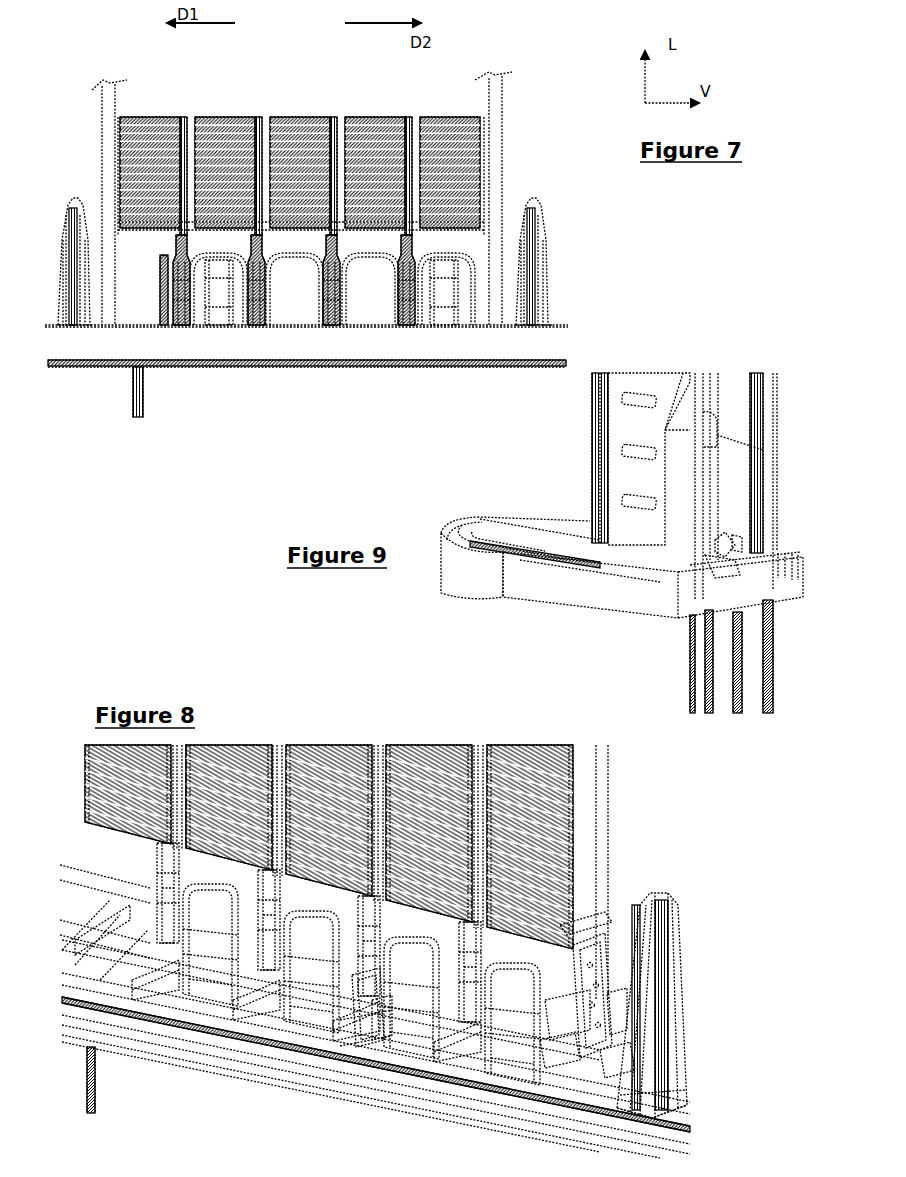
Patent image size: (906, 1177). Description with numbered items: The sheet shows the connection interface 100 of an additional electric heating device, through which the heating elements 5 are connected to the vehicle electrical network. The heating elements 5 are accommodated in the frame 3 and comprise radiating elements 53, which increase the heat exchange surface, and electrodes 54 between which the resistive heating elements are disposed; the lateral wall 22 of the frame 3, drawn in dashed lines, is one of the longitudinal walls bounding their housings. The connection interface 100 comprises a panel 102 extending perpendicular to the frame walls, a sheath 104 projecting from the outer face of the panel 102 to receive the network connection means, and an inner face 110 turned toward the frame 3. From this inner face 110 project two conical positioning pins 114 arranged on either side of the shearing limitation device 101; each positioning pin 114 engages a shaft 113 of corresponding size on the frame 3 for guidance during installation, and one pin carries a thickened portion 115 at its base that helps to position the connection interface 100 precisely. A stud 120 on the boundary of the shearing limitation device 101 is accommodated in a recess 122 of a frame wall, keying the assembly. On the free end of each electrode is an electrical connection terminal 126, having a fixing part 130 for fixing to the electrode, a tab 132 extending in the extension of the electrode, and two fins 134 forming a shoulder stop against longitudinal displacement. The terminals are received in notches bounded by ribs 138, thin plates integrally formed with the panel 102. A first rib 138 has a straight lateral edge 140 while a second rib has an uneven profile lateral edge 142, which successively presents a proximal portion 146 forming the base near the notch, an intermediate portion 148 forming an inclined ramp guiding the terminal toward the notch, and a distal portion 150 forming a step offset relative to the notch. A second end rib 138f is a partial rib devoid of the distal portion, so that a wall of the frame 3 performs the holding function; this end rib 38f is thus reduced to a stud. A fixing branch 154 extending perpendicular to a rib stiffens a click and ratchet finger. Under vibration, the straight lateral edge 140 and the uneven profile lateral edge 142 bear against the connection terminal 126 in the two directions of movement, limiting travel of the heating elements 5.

In FIG. 9, the frame 3 is at (657, 479).
In FIG. 7, the heating elements 5 is at (301, 142).
In FIG. 8, the heating elements 5 is at (530, 813).
In FIG. 7, the lateral wall 22 is at (497, 117).
In FIG. 8, the second end rib 38f is at (608, 1027).
In FIG. 7, the radiating elements 53 is at (233, 163).
In FIG. 7, the electrodes 54 is at (337, 205).
In FIG. 7, the connection interface 100 is at (303, 421).
In FIG. 8, the connection interface 100 is at (350, 1066).
In FIG. 9, the connection interface 100 is at (609, 587).
In FIG. 8, the shearing limitation device 101 is at (310, 900).
In FIG. 7, the panel 102 is at (218, 353).
In FIG. 8, the panel 102 is at (97, 1036).
In FIG. 9, the panel 102 is at (609, 587).
In FIG. 7, the sheath 104 is at (143, 393).
In FIG. 8, the sheath 104 is at (91, 1080).
In FIG. 9, the sheath 104 is at (697, 687).
In FIG. 7, the inner face 110 is at (140, 322).
In FIG. 9, the inner face 110 is at (520, 535).
In FIG. 9, the shaft 113 is at (668, 472).
In FIG. 7, the positioning pin 114 is at (547, 257).
In FIG. 8, the positioning pin 114 is at (668, 968).
In FIG. 7, the thickened portion 115 is at (555, 318).
In FIG. 8, the thickened portion 115 is at (678, 1070).
In FIG. 8, the stud 120 is at (615, 1050).
In FIG. 9, the stud 120 is at (723, 557).
In FIG. 9, the recess 122 is at (722, 525).
In FIG. 7, the electrical connection terminal 126 is at (413, 257).
In FIG. 8, the electrical connection terminal 126 is at (602, 950).
In FIG. 8, the fixing part 130 is at (619, 928).
In FIG. 8, the tab 132 is at (586, 1037).
In FIG. 8, the fins 134 is at (557, 1067).
In FIG. 7, the rib 138 is at (385, 297).
In FIG. 8, the rib 138 is at (432, 925).
In FIG. 9, the second end rib 138f is at (738, 537).
In FIG. 7, the straight lateral edge 140 is at (318, 283).
In FIG. 7, the uneven profile lateral edge 142 is at (360, 283).
In FIG. 8, the proximal portion 146 is at (380, 975).
In FIG. 8, the intermediate portion 148 is at (378, 1013).
In FIG. 8, the distal portion 150 is at (378, 1027).
In FIG. 8, the fixing branch 154 is at (227, 883).